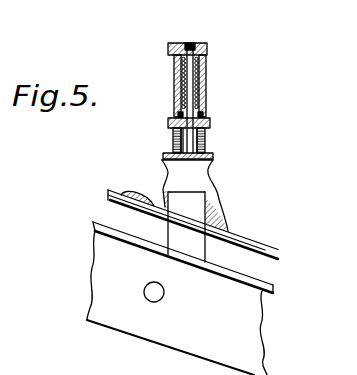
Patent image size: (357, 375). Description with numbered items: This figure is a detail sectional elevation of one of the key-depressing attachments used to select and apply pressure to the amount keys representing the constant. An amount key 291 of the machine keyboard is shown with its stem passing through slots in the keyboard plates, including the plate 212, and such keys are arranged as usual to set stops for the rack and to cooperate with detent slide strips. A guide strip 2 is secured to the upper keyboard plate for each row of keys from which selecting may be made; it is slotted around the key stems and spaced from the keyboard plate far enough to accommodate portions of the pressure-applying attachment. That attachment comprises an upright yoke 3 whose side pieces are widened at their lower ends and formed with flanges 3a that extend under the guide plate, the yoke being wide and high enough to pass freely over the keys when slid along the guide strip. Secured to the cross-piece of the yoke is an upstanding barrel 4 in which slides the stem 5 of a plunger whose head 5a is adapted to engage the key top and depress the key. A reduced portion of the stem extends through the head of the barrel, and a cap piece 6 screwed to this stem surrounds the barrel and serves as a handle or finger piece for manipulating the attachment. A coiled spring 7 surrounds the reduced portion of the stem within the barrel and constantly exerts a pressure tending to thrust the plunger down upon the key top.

The guide strip 2 is at (122, 189).
The upright yoke 3 is at (216, 152).
The flange 3a is at (222, 234).
The upstanding barrel 4 is at (172, 117).
The plunger stem 5 is at (208, 134).
The plunger head 5a is at (172, 157).
The cap piece 6 is at (199, 44).
The coiled spring 7 is at (206, 98).
The amount key 291 is at (212, 203).
The keyboard plate 212 is at (275, 248).